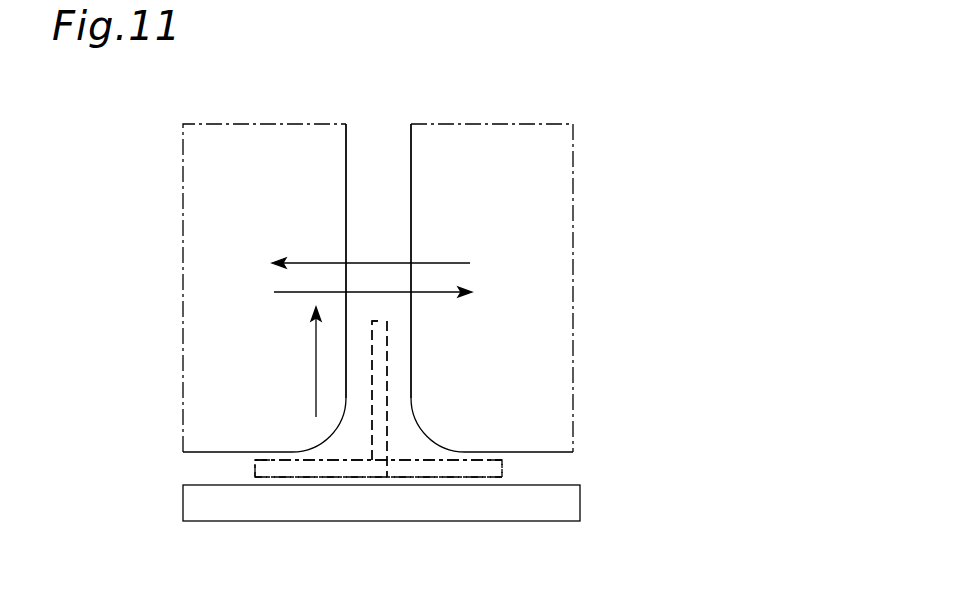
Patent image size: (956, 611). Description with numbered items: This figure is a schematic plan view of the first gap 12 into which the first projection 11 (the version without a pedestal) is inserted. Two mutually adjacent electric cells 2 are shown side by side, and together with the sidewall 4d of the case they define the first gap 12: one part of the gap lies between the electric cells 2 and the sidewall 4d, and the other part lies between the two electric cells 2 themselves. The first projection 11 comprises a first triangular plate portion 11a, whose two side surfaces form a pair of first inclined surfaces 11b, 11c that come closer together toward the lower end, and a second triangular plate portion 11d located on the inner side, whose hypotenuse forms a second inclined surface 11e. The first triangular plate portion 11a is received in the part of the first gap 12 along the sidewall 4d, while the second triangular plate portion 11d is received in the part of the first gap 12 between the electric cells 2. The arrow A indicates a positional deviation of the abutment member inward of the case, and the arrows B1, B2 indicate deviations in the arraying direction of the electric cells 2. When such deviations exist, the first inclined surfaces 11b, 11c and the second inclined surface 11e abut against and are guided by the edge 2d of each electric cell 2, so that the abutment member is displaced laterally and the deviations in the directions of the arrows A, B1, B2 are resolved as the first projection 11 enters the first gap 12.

The electric cell 2 is at (200, 373).
The edge 2d is at (346, 168).
The sidewall 4d is at (567, 505).
The first projection 11 is at (428, 478).
The first triangular plate portion 11a is at (318, 470).
The first inclined surface 11b is at (253, 468).
The first inclined surface 11c is at (500, 468).
The second triangular plate portion 11d is at (383, 364).
The second inclined surface 11e is at (378, 321).
The first gap 12 is at (397, 482).
The arrow A is at (316, 385).
The arrow B1 is at (440, 263).
The arrow B2 is at (448, 292).